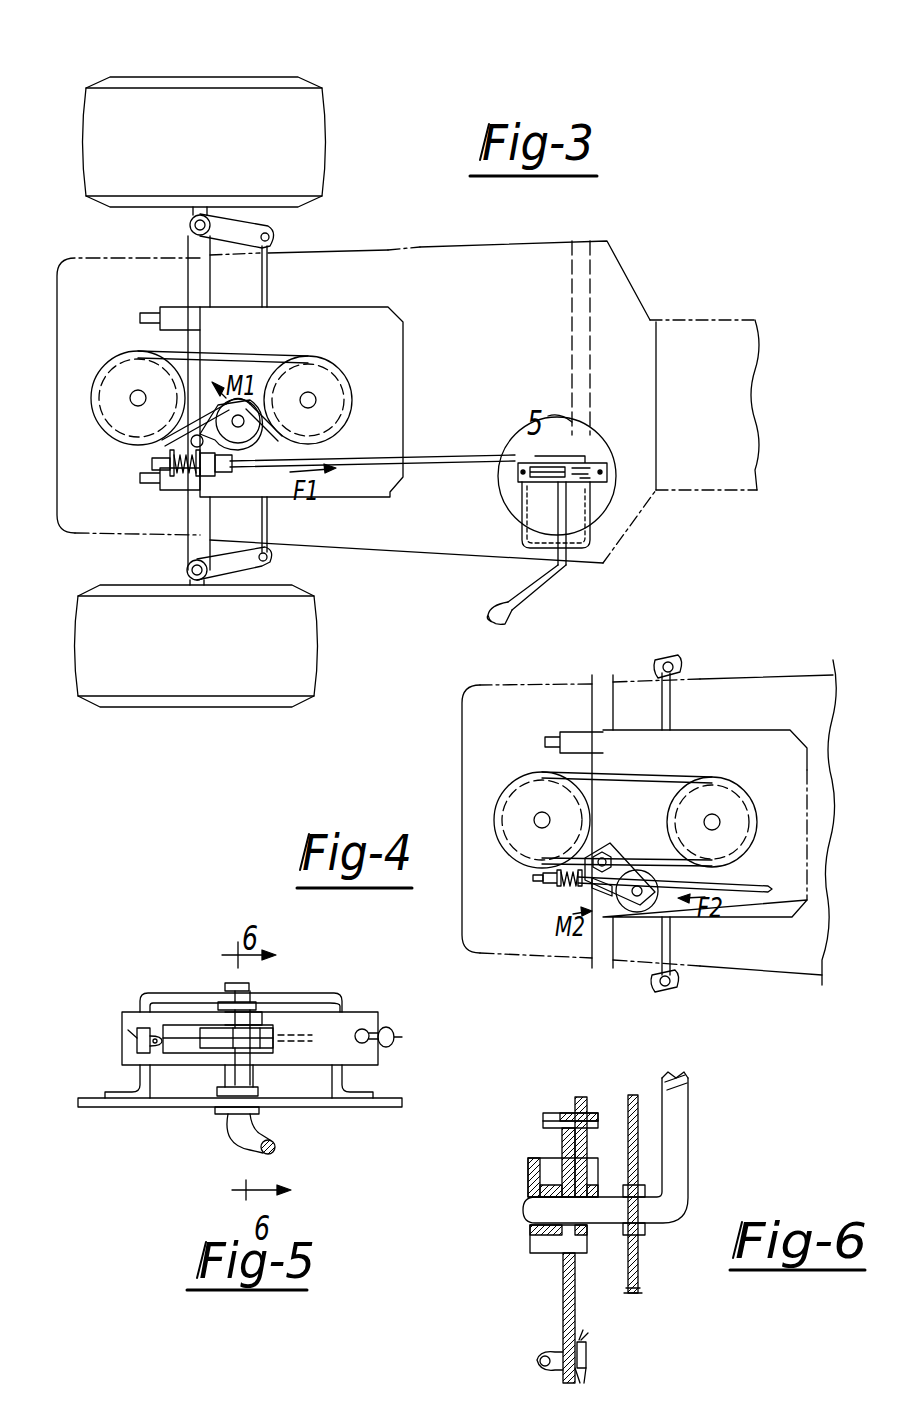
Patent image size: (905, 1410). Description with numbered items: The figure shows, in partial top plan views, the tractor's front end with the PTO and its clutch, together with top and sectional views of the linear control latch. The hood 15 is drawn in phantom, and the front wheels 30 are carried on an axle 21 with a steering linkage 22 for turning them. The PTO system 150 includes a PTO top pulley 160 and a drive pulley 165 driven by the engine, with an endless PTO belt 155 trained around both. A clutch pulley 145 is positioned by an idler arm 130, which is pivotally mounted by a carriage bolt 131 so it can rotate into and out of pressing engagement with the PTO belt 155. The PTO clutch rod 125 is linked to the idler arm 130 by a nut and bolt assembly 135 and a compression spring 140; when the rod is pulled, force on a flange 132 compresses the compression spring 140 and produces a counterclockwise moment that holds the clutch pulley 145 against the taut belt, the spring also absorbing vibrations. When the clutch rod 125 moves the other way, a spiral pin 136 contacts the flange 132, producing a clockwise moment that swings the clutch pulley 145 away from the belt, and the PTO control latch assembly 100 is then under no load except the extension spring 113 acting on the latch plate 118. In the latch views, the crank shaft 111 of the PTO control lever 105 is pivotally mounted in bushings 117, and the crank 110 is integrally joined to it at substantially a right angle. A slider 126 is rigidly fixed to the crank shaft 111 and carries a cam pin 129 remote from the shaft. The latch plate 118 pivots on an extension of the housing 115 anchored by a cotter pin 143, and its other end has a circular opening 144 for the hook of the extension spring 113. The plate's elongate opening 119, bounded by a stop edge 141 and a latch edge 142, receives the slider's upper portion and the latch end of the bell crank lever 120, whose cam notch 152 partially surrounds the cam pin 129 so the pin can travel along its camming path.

In FIG. 3, the hood 15 is at (470, 250).
In FIG. 4, the hood 15 is at (728, 677).
In FIG. 3, the axle 21 is at (188, 278).
In FIG. 4, the axle 21 is at (602, 678).
In FIG. 3, the steering linkage 22 is at (275, 232).
In FIG. 4, the steering linkage 22 is at (668, 660).
In FIG. 3, the front wheels 30 is at (305, 97).
In FIG. 3, the PTO control latch assembly 100 is at (603, 503).
In FIG. 5, the PTO control lever 105 is at (184, 1120).
In FIG. 6, the PTO control lever 105 is at (708, 1130).
In FIG. 6, the crank 110 is at (672, 1108).
In FIG. 5, the crank shaft 111 is at (232, 1082).
In FIG. 6, the crank shaft 111 is at (530, 1212).
In FIG. 5, the extension spring 113 is at (394, 1042).
In FIG. 5, the housing 115 is at (140, 1010).
In FIG. 6, the housing 115 is at (535, 1232).
In FIG. 5, the bushings 117 is at (245, 1005).
In FIG. 6, the bushings 117 is at (530, 1185).
In FIG. 5, the latch plate 118 is at (356, 1058).
In FIG. 6, the latch plate 118 is at (553, 1113).
In FIG. 5, the opening 119 is at (180, 1030).
In FIG. 6, the opening 119 is at (575, 1110).
In FIG. 5, the bell crank lever 120 is at (202, 1041).
In FIG. 6, the bell crank lever 120 is at (565, 1312).
In FIG. 3, the PTO clutch rod 125 is at (372, 461).
In FIG. 4, the PTO clutch rod 125 is at (748, 900).
In FIG. 5, the slider 126 is at (250, 1055).
In FIG. 6, the slider 126 is at (580, 1097).
In FIG. 5, the cam pin 129 is at (215, 987).
In FIG. 6, the cam pin 129 is at (555, 1125).
In FIG. 3, the idler arm 130 is at (133, 447).
In FIG. 4, the idler arm 130 is at (705, 874).
In FIG. 3, the carriage bolt 131 is at (207, 447).
In FIG. 4, the carriage bolt 131 is at (615, 860).
In FIG. 3, the flange 132 is at (197, 465).
In FIG. 3, the nut and bolt assembly 135 is at (170, 470).
In FIG. 4, the nut and bolt assembly 135 is at (545, 878).
In FIG. 3, the spiral pin 136 is at (228, 470).
In FIG. 4, the spiral pin 136 is at (598, 852).
In FIG. 3, the compression spring 140 is at (183, 478).
In FIG. 4, the compression spring 140 is at (550, 888).
In FIG. 5, the stop edge 141 is at (165, 1028).
In FIG. 5, the latch edge 142 is at (275, 1035).
In FIG. 5, the cotter pin 143 is at (130, 1047).
In FIG. 5, the circular opening 144 is at (369, 1036).
In FIG. 3, the clutch pulley 145 is at (298, 441).
In FIG. 4, the clutch pulley 145 is at (655, 905).
In FIG. 3, the PTO system 150 is at (80, 274).
In FIG. 4, the PTO system 150 is at (490, 752).
In FIG. 5, the cam notch 152 is at (237, 1116).
In FIG. 6, the cam notch 152 is at (565, 1132).
In FIG. 3, the PTO belt 155 is at (245, 352).
In FIG. 4, the PTO belt 155 is at (650, 775).
In FIG. 3, the PTO top pulley 160 is at (122, 358).
In FIG. 4, the PTO top pulley 160 is at (505, 802).
In FIG. 3, the drive pulley 165 is at (330, 368).
In FIG. 4, the drive pulley 165 is at (725, 790).